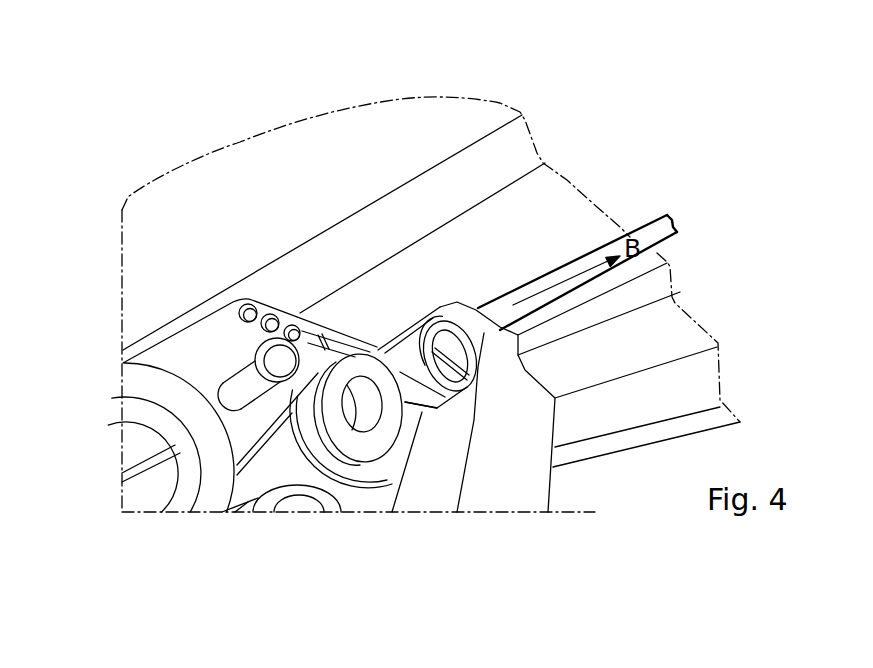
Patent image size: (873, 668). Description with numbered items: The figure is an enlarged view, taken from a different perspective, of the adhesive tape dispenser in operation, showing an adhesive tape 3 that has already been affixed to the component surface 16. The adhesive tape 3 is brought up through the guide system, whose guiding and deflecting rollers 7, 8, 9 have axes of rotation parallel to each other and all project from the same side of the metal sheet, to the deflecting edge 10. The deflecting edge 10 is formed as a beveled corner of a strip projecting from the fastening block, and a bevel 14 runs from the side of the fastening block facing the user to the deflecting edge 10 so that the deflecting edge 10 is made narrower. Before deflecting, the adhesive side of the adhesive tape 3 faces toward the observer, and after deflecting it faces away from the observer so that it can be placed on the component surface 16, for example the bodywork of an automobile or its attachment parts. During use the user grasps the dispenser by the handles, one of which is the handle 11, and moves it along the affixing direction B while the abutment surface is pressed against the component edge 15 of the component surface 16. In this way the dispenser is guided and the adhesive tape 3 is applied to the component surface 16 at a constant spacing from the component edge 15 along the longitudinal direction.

The adhesive tape 3 is at (270, 428).
The guiding and deflecting roller 7 is at (357, 363).
The guiding and deflecting roller 8 is at (405, 358).
The guiding and deflecting roller 9 is at (308, 492).
The deflecting edge 10 is at (441, 308).
The handle 11 is at (456, 316).
The bevel 14 is at (200, 342).
The component edge 15 is at (155, 390).
The component surface 16 is at (647, 297).